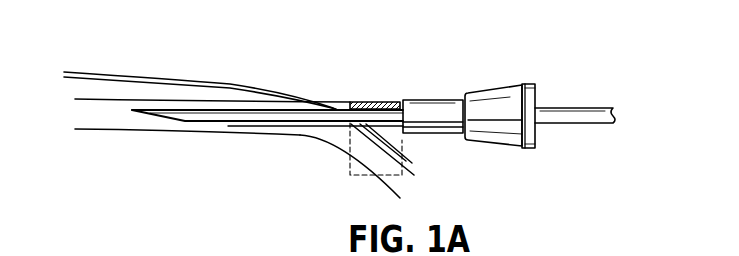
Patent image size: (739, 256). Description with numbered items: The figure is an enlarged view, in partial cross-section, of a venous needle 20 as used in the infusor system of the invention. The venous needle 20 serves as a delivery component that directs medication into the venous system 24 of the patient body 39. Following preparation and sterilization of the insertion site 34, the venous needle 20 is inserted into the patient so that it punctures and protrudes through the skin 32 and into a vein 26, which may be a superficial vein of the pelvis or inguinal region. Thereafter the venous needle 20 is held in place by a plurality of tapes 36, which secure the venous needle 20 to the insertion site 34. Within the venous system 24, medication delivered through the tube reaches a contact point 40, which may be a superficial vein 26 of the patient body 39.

The venous needle 20 is at (450, 98).
The venous system 24 is at (336, 155).
The vein 26 is at (205, 132).
The skin 32 is at (157, 84).
The insertion site 34 is at (338, 105).
The tapes 36 is at (387, 101).
The patient body 39 is at (101, 72).
The contact point 40 is at (143, 131).